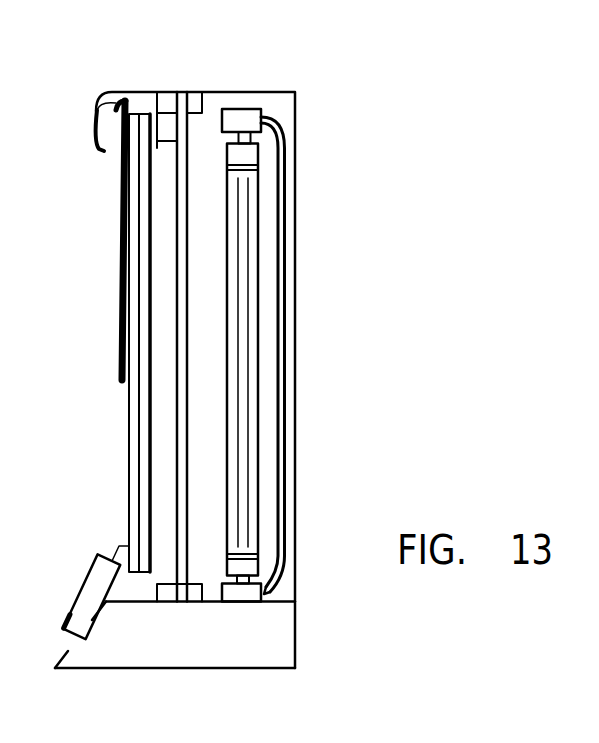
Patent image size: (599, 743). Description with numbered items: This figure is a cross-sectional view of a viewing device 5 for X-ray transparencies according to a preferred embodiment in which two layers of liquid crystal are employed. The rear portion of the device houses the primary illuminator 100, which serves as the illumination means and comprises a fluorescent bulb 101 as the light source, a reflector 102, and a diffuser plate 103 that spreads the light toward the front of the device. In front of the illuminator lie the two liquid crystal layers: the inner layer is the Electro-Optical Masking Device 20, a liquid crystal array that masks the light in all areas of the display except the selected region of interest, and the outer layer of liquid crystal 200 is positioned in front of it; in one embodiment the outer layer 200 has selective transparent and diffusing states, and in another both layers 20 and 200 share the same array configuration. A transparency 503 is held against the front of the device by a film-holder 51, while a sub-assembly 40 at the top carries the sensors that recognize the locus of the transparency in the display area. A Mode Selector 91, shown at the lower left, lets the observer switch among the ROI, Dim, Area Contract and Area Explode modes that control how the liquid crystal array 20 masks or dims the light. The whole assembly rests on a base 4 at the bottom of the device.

The base 4 is at (258, 650).
The viewing device 5 is at (218, 79).
The Electro-Optical Masking Device 20 is at (107, 343).
The sub-assembly 40 is at (119, 84).
The film-holder 51 is at (88, 103).
The Mode Selector 91 is at (82, 563).
The primary illuminator 100 is at (285, 100).
The fluorescent bulb 101 is at (246, 269).
The reflector 102 is at (276, 361).
The diffuser plate 103 is at (179, 468).
The outer layer of liquid crystal 200 is at (124, 436).
The holding bar 503 is at (113, 296).